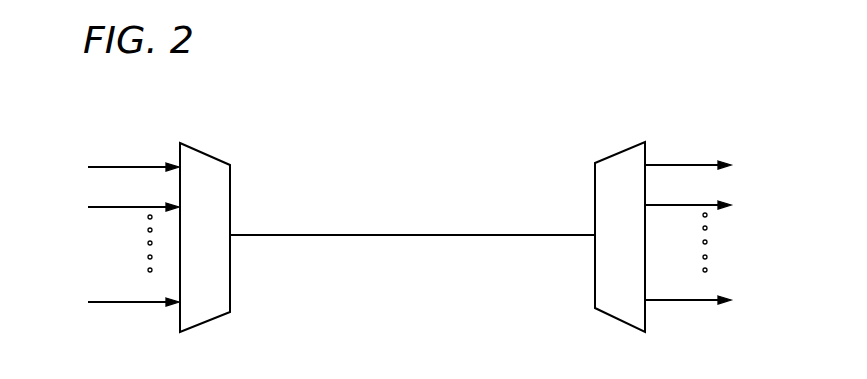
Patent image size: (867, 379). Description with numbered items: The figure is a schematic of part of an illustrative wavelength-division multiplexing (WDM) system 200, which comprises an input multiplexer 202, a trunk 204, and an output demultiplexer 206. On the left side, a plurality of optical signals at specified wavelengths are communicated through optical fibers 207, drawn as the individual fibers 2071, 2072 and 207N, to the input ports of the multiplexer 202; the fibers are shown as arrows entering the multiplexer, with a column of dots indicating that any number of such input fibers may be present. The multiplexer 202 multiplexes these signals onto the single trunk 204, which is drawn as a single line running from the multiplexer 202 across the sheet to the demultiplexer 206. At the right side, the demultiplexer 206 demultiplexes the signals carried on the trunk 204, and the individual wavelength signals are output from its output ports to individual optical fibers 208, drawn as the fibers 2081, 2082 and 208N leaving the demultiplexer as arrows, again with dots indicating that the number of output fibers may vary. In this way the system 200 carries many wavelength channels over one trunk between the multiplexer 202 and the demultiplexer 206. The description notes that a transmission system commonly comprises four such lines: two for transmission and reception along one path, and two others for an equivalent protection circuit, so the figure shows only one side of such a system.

The WDM system 200 is at (410, 108).
The input multiplexer 202 is at (217, 160).
The trunk 204 is at (393, 234).
The output demultiplexer 206 is at (620, 150).
The optical fibers 207 is at (98, 228).
The first input optical fiber 2071 is at (88, 166).
The second input optical fiber 2072 is at (88, 206).
The Nth input optical fiber 207N is at (88, 300).
The individual optical fibers 208 is at (730, 225).
The first output optical fiber 2081 is at (733, 167).
The second output optical fiber 2082 is at (733, 207).
The Nth output optical fiber 208N is at (733, 302).